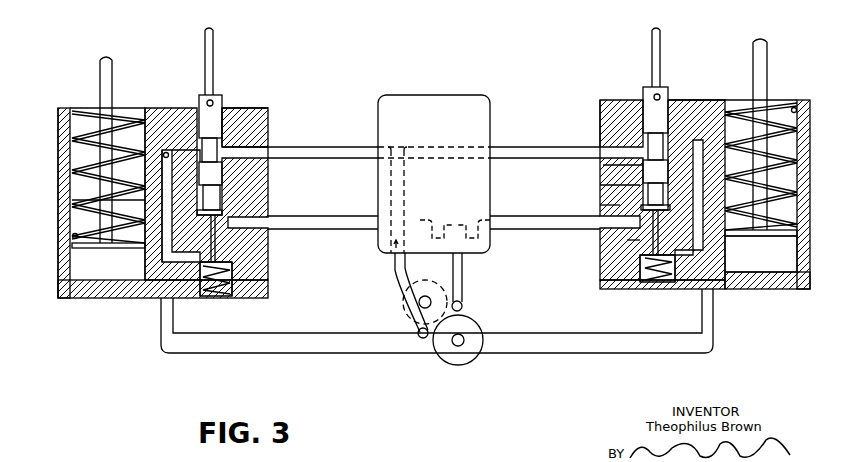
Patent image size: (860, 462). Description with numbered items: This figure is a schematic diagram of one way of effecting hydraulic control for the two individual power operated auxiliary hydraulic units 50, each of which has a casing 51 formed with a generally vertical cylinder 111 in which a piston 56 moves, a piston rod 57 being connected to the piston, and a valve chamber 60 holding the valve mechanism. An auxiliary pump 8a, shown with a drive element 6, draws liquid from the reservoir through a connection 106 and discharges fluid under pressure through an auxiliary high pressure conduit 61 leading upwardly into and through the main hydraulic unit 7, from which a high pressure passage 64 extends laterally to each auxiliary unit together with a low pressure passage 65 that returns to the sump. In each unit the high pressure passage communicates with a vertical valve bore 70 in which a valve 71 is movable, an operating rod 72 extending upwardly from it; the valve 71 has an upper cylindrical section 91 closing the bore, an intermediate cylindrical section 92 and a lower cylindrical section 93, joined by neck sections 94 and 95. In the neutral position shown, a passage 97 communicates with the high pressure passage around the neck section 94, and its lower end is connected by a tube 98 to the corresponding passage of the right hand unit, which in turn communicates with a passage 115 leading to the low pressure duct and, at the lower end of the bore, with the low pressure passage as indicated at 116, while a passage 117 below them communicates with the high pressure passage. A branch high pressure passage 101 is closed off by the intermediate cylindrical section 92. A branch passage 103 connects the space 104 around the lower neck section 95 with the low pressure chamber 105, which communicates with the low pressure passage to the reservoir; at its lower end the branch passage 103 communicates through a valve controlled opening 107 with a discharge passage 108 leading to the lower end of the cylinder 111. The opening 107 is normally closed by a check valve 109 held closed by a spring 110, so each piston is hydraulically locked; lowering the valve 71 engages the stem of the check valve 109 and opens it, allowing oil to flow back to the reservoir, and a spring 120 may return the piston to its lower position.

The auxiliary hydraulic unit 50 is at (84, 307).
The casing 51 is at (62, 112).
The spring 120 is at (88, 108).
The piston rod 57 is at (112, 144).
The piston 56 is at (122, 243).
The space surrounding lower neck section 104 is at (145, 200).
The cylinder 111 is at (70, 238).
The passage 97 is at (206, 202).
The branch passage 103 is at (158, 295).
The valve bore 70 is at (245, 124).
The operating rod 72 is at (214, 50).
The valve 71 is at (218, 98).
The upper cylindrical section 91 is at (222, 120).
The valve chamber 60 is at (263, 106).
The intermediate cylindrical section 92 is at (199, 176).
The lower cylindrical section 93 is at (222, 190).
The low pressure chamber 105 is at (222, 212).
The neck section 94 is at (206, 158).
The branch high pressure passage 101 is at (252, 158).
The lower neck section 95 is at (166, 215).
The check valve 109 is at (222, 250).
The valve controlled opening 107 is at (232, 272).
The discharge passage 108 is at (190, 295).
The spring 110 is at (228, 298).
The main hydraulic unit 7 is at (495, 93).
The right hand high pressure passage 64 is at (526, 147).
The right hand low pressure passage 65 is at (520, 216).
The auxiliary high pressure conduit 61 is at (395, 275).
The connection 106 is at (462, 274).
The auxiliary pump 8a is at (455, 368).
The shaft 6 is at (462, 346).
The tube 98 is at (298, 333).
The passage 117 is at (603, 165).
The passage 115 is at (600, 205).
The communication 116 is at (623, 231).